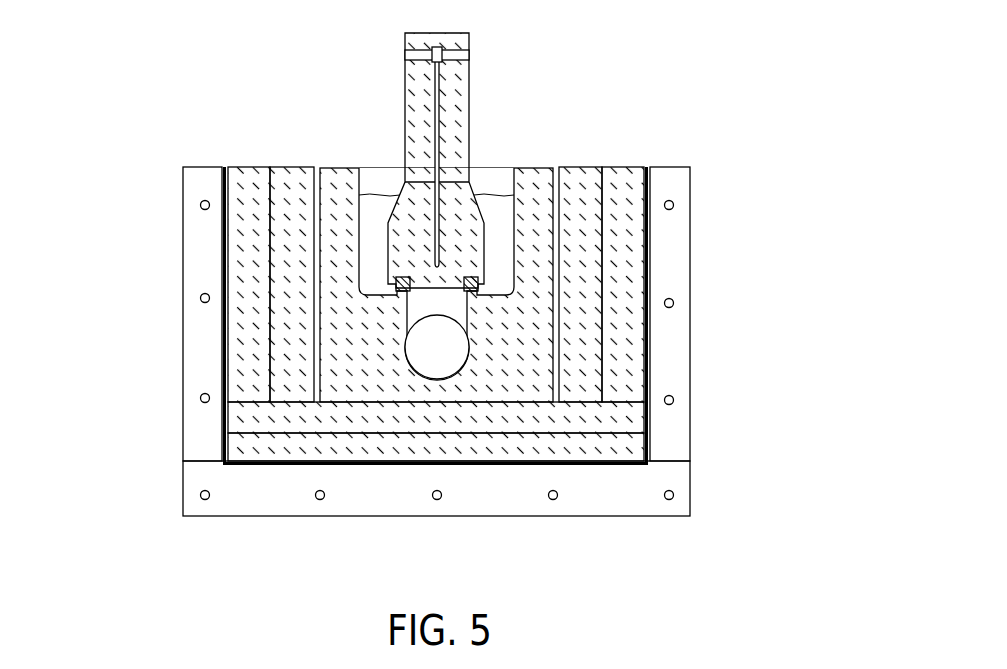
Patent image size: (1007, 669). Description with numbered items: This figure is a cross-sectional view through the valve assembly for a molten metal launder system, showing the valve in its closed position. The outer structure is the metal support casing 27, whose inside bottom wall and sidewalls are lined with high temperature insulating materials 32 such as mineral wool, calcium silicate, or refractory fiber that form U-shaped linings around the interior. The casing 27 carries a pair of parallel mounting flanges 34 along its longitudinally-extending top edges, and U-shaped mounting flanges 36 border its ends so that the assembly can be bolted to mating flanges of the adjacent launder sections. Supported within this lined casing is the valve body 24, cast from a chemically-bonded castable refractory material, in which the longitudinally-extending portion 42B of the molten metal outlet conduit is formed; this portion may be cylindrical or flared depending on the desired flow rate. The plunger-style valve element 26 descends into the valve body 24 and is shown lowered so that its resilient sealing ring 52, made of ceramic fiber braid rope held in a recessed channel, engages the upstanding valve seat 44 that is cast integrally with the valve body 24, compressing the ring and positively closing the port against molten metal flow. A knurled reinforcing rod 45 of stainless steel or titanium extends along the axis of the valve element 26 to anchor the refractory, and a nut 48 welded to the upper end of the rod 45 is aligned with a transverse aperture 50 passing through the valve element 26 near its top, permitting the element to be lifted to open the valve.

The valve body 24 is at (380, 347).
The valve element 26 is at (469, 125).
The support casing 27 is at (465, 304).
The high temperature insulating materials 32 is at (247, 178).
The mounting flanges 34 is at (202, 158).
The U-shaped mounting flanges 36 is at (203, 424).
The longitudinally-extending portion of the outlet conduit 42B is at (462, 357).
The valve seat 44 is at (396, 290).
The reinforcing rod 45 is at (435, 120).
The nut 48 is at (433, 47).
The transverse aperture 50 is at (470, 54).
The sealing ring 52 is at (480, 283).